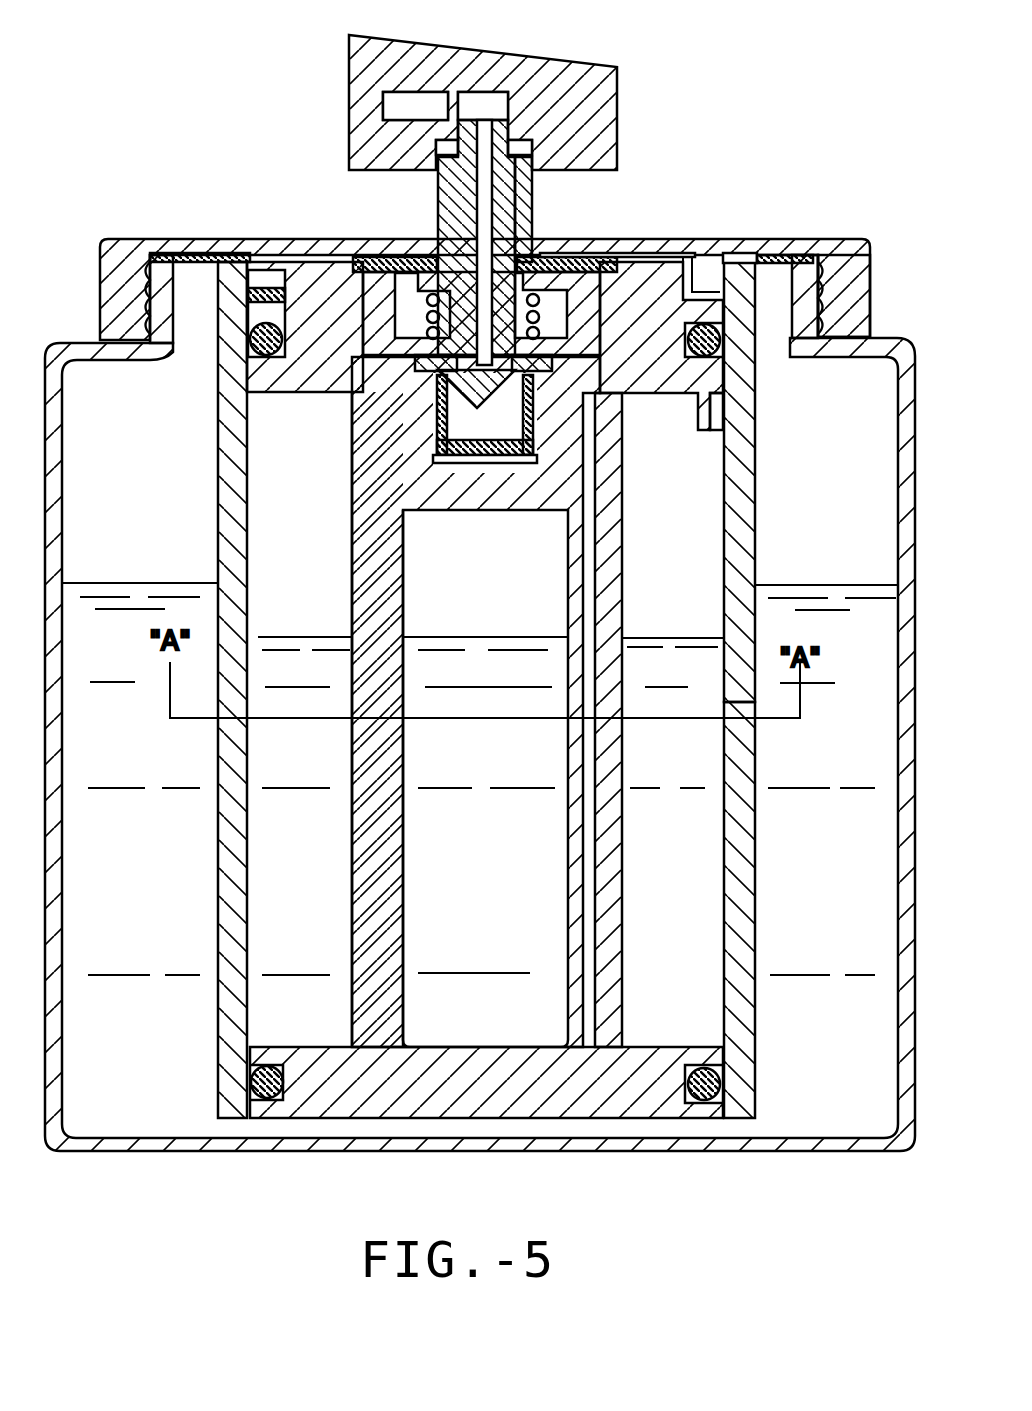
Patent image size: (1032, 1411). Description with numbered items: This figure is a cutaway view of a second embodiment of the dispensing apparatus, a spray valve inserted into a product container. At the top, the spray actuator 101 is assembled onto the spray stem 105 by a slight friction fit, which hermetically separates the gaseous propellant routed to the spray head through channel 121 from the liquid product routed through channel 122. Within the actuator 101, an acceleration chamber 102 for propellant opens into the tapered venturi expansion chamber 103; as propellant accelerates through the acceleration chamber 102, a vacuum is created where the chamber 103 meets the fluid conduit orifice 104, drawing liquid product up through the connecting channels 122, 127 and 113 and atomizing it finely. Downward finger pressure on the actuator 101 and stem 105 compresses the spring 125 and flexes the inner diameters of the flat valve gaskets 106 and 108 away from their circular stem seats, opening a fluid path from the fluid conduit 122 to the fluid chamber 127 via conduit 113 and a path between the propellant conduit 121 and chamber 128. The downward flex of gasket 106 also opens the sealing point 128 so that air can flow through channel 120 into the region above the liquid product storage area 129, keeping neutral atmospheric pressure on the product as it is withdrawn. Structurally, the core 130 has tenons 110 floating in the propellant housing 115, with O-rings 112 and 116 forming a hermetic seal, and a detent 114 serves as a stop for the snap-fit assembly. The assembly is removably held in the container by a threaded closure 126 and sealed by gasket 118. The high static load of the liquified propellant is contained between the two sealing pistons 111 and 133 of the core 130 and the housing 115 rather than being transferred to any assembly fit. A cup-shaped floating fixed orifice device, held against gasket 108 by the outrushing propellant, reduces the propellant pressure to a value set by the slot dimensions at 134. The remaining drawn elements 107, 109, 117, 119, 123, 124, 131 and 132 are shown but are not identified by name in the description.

The spray actuator 101 is at (349, 47).
The acceleration chamber 102 is at (383, 105).
The venturi expansion chamber 103 is at (400, 108).
The fluid conduit orifice 104 is at (440, 148).
The spray stem 105 is at (436, 212).
The valve gasket 106 is at (335, 270).
The lid 107 is at (215, 262).
The valve gasket 108 is at (350, 392).
The cup wall 109 is at (437, 412).
The tenons 110 is at (568, 832).
The sealing piston 111 is at (666, 1047).
The O-ring 112 is at (722, 1084).
The conduit 113 is at (600, 500).
The detent 114 is at (713, 407).
The propellant housing 115 is at (755, 462).
The O-ring 116 is at (720, 345).
The outer casing 117 is at (913, 385).
The gasket 118 is at (795, 258).
The retaining plate 119 is at (745, 258).
The channel 120 is at (690, 262).
The propellant channel 121 is at (505, 196).
The fluid conduit 122 is at (510, 180).
The cylinder 123 is at (680, 858).
The fluid reservoir 124 is at (843, 905).
The spring 125 is at (560, 342).
The threaded closure 126 is at (872, 268).
The fluid chamber 127 is at (605, 256).
The chamber 128 is at (540, 258).
The liquid product storage area 129 is at (798, 560).
The core 130 is at (350, 523).
The cup bottom 131 is at (437, 435).
The seal strip 132 is at (320, 262).
The sealing piston 133 is at (683, 395).
The slot 134 is at (553, 440).